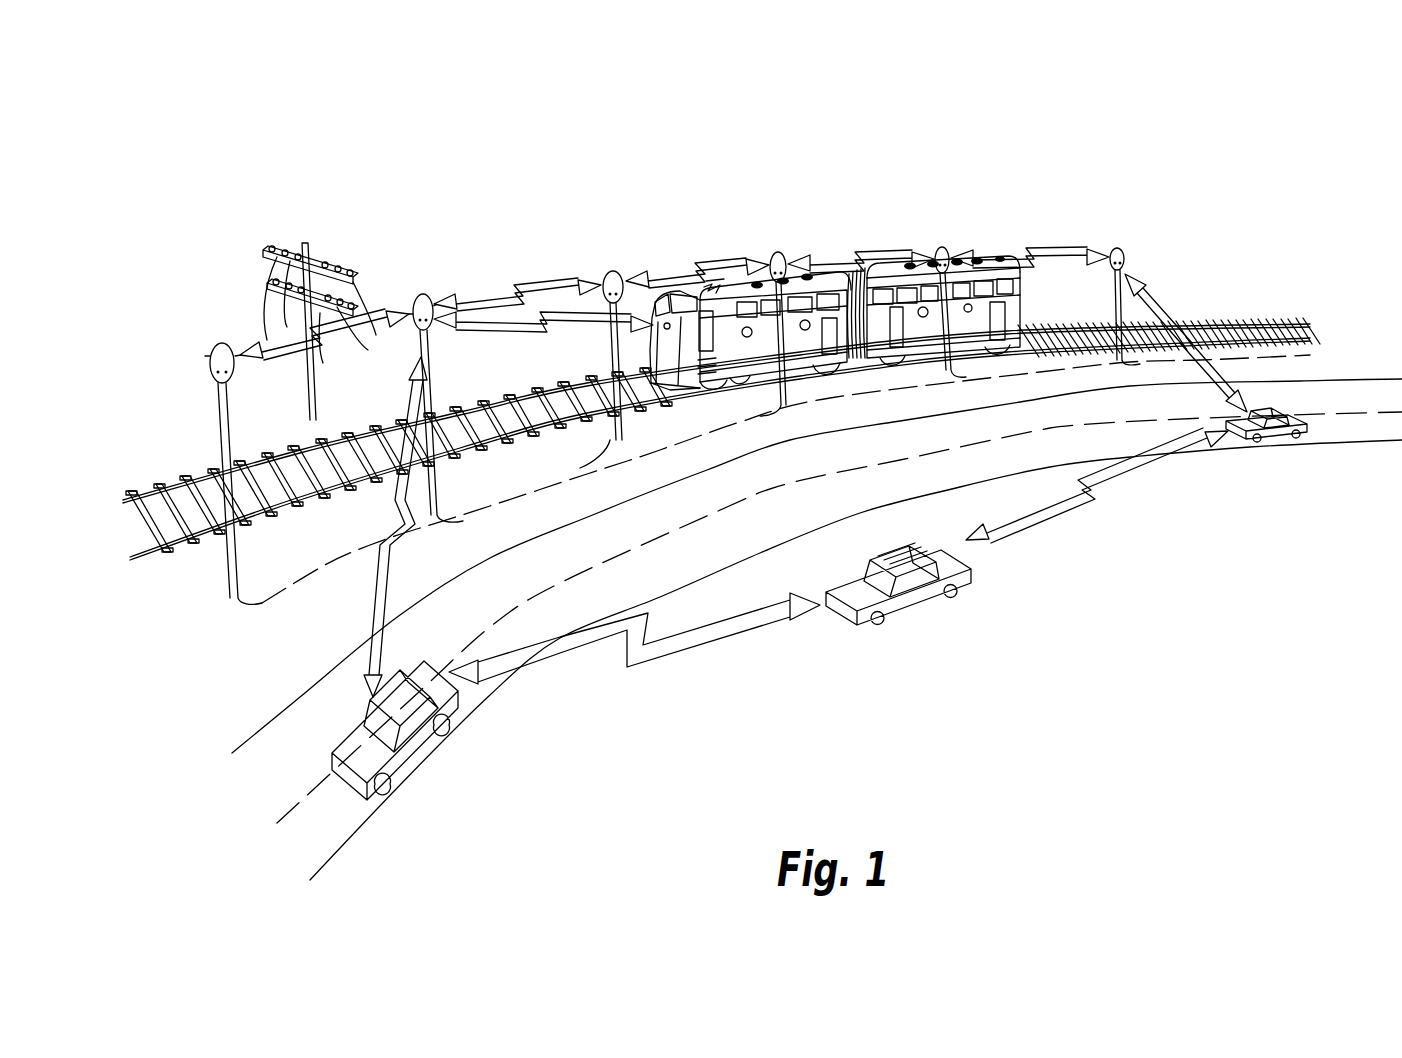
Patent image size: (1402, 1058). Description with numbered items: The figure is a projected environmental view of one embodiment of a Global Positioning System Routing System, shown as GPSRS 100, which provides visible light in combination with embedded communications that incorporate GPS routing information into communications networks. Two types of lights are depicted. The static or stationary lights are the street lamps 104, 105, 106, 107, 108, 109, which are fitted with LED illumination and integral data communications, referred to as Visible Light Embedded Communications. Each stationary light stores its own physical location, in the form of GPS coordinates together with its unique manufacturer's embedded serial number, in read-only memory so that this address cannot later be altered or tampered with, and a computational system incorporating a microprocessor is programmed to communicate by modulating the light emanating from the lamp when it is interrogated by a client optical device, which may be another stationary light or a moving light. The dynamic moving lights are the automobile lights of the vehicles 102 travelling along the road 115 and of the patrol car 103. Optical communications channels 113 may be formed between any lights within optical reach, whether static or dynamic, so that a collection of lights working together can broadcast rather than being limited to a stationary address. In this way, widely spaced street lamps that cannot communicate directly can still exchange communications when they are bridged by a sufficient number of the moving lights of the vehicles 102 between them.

The GPSRS 100 is at (978, 110).
The vehicles 102 is at (1276, 438).
The patrol car 103 is at (968, 562).
The street lamp 104 is at (213, 343).
The street lamp 105 is at (424, 293).
The street lamp 106 is at (616, 270).
The street lamp 107 is at (781, 250).
The street lamp 108 is at (946, 246).
The street lamp 109 is at (1120, 247).
The optical communications channels 113 is at (522, 283).
The road 115 is at (332, 837).